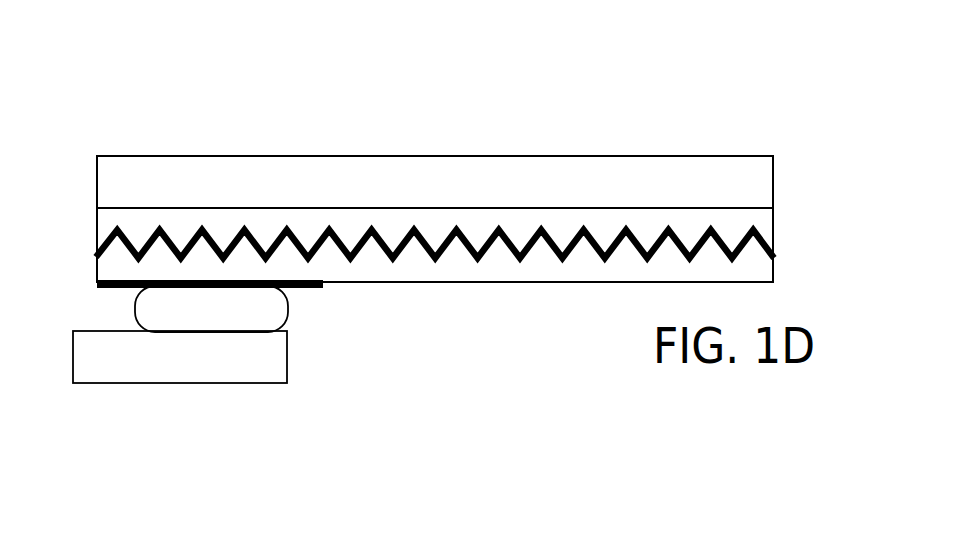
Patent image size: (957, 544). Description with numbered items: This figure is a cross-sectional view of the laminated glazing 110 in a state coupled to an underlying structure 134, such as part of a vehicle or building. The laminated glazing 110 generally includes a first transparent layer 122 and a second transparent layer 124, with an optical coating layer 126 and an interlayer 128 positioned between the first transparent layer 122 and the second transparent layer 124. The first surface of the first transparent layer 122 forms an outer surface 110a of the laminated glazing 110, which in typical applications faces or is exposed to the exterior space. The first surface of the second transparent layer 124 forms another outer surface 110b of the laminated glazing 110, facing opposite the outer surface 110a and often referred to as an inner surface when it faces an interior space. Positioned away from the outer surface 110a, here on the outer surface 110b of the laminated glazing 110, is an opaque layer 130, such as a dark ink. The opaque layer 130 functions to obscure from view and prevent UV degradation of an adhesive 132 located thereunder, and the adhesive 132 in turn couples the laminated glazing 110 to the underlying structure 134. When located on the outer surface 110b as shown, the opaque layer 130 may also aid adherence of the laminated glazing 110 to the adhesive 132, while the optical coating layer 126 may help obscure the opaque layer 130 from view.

The laminated glazing 110 is at (758, 118).
The outer surface 110a is at (345, 156).
The outer surface 110b is at (487, 283).
The first transparent layer 122 is at (774, 174).
The interlayer 128 is at (774, 211).
The optical coating layer 126 is at (772, 234).
The second transparent layer 124 is at (774, 282).
The opaque layer 130 is at (318, 288).
The adhesive 132 is at (187, 320).
The underlying structure 134 is at (148, 370).